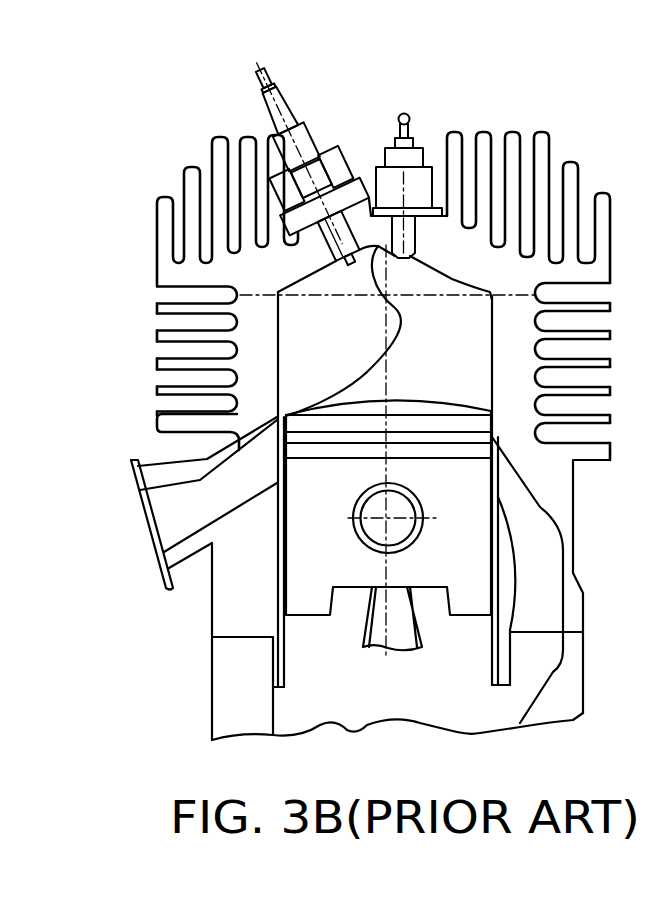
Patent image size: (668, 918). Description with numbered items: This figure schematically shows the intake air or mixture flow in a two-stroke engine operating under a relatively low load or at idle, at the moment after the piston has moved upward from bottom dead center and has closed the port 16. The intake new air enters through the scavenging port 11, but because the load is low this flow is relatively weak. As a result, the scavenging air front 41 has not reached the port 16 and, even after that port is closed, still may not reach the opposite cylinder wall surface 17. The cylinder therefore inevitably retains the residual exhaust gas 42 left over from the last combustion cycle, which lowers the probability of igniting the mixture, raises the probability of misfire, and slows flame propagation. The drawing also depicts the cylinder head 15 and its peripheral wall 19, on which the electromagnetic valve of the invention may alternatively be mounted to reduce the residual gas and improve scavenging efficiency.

The scavenging port 11 is at (520, 509).
The cylinder head 15 is at (510, 280).
The exhaust port 16 is at (245, 470).
The cylinder wall surface 17 is at (250, 410).
The peripheral wall of the cylinder head 19 is at (275, 247).
The scavenging air front 41 is at (447, 282).
The residual exhaust gas 42 is at (293, 337).